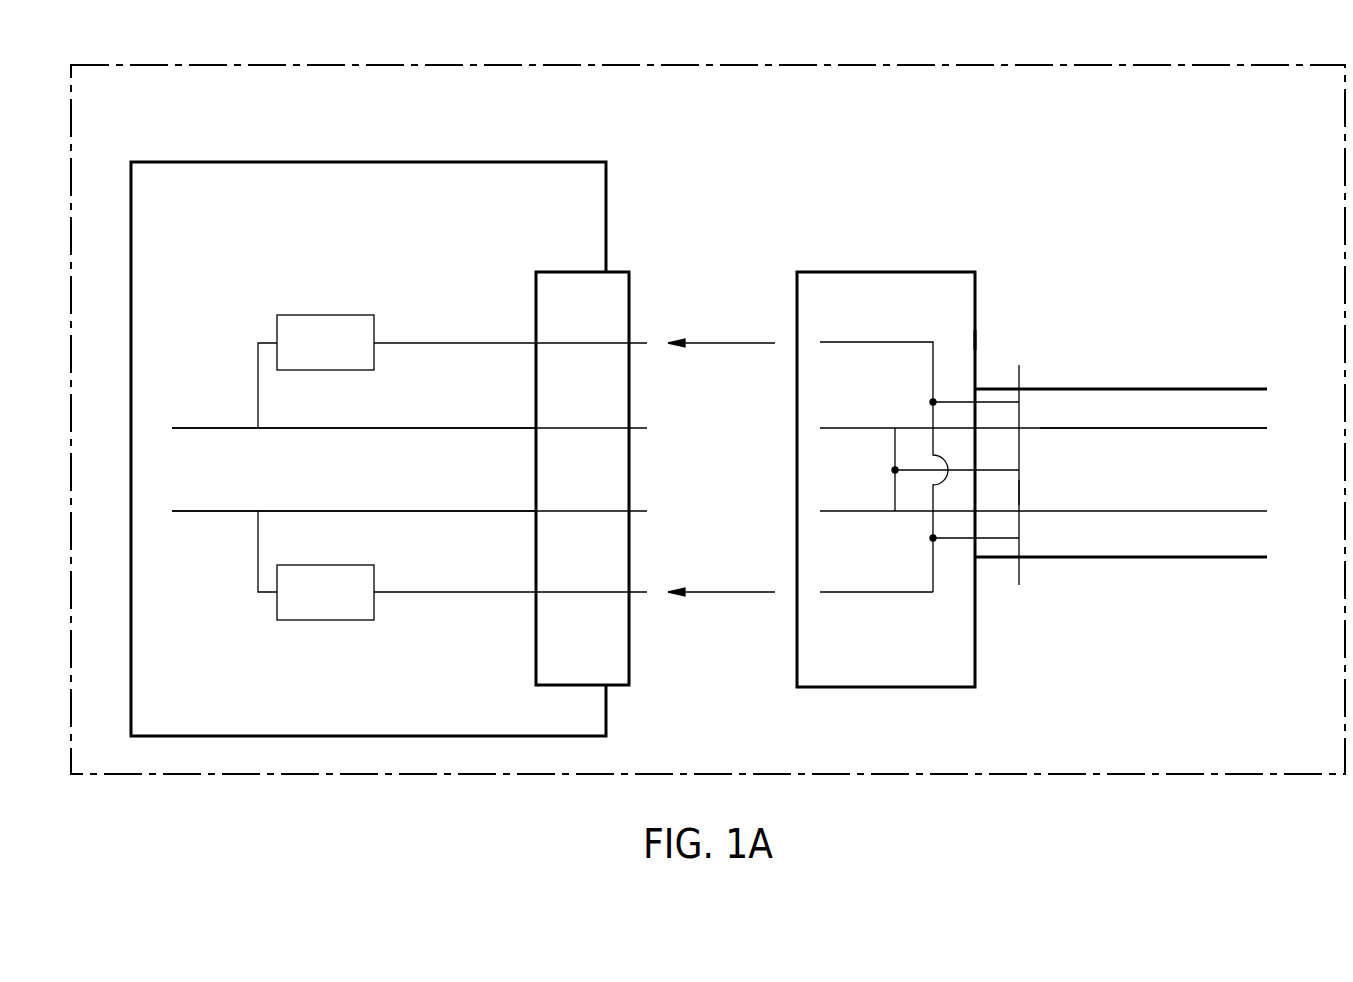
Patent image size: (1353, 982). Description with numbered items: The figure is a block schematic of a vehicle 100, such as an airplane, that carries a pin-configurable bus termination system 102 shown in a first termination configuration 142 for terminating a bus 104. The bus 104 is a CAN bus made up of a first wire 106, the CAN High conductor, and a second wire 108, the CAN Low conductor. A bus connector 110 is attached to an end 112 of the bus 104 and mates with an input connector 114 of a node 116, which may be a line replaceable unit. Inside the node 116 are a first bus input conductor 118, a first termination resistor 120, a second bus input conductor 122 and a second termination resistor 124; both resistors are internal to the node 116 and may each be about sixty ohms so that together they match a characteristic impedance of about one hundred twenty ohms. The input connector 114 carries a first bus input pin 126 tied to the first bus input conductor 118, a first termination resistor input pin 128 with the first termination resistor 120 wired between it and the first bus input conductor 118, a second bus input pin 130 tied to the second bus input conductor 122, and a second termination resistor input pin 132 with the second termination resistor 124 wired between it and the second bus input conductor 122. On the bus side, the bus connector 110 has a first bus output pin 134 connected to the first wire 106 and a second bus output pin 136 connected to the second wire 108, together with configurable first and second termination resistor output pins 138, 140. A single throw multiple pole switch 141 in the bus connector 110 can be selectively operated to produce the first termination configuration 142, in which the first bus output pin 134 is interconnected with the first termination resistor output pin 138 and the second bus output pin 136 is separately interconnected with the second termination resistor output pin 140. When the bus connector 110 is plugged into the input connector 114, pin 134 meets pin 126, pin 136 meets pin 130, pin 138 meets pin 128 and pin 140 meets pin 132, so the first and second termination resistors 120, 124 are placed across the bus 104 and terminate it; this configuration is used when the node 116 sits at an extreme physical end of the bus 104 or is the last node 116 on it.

The vehicle 100 is at (613, 65).
The pin-configurable bus termination system 102 is at (1007, 242).
The bus 104 is at (1162, 389).
The first wire 106 is at (1198, 430).
The second wire 108 is at (1103, 512).
The bus connector 110 is at (885, 272).
The end of the bus 112 is at (978, 380).
The input connector 114 is at (629, 272).
The node 116 is at (398, 162).
The first bus input conductor 118 is at (398, 428).
The first termination resistor 120 is at (327, 315).
The second bus input conductor 122 is at (383, 511).
The second termination resistor 124 is at (322, 620).
The first bus input pin 126 is at (642, 428).
The first termination resistor input pin 128 is at (642, 343).
The second bus input pin 130 is at (642, 511).
The second termination resistor input pin 132 is at (642, 592).
The first bus output pin 134 is at (852, 428).
The second bus output pin 136 is at (855, 511).
The first termination resistor output pin 138 is at (877, 342).
The second termination resistor output pin 140 is at (855, 592).
The single throw multiple pole switch 141 is at (1022, 493).
The first termination configuration 142 is at (967, 342).